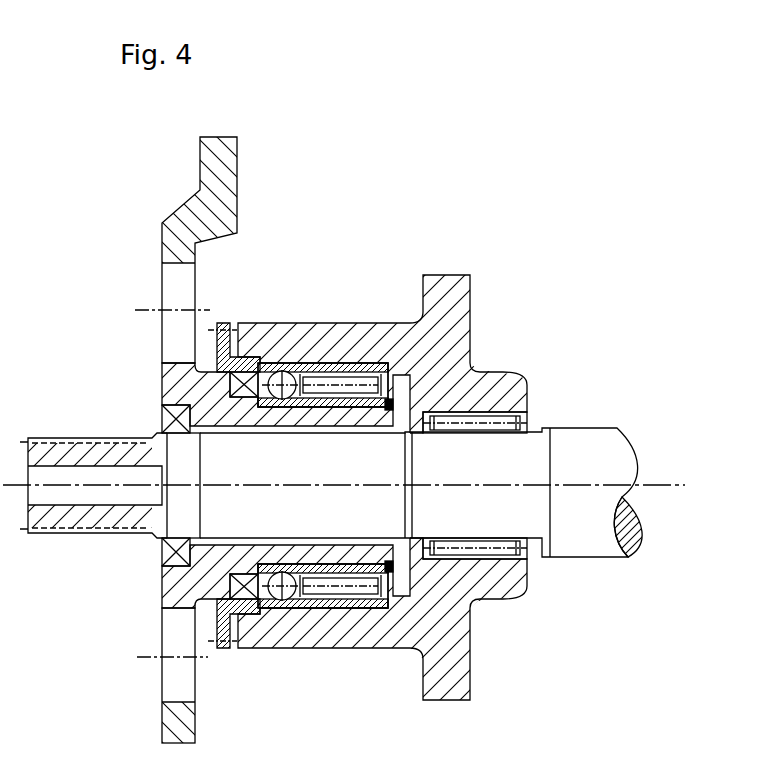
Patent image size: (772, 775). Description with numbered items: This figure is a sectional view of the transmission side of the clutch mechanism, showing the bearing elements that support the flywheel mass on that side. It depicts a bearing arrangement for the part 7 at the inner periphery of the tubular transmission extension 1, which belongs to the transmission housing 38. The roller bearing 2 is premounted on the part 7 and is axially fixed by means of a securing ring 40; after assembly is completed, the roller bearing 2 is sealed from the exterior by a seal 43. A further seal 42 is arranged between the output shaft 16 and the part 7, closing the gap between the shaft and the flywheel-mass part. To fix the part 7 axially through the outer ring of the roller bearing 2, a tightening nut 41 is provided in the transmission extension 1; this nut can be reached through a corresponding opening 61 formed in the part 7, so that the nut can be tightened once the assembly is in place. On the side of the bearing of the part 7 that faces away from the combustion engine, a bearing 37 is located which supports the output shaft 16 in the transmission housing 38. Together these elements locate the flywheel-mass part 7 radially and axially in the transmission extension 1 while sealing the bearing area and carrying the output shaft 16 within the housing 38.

The tubular transmission extension 1 is at (307, 335).
The roller bearing 2 is at (350, 382).
The part 7 is at (223, 200).
The output shaft 16 is at (592, 458).
The bearing 37 is at (530, 378).
The transmission housing 38 is at (455, 320).
The securing ring 40 is at (397, 575).
The tightening nut 41 is at (227, 643).
The further seal 42 is at (167, 417).
The seal 43 is at (170, 377).
The opening 61 is at (177, 673).